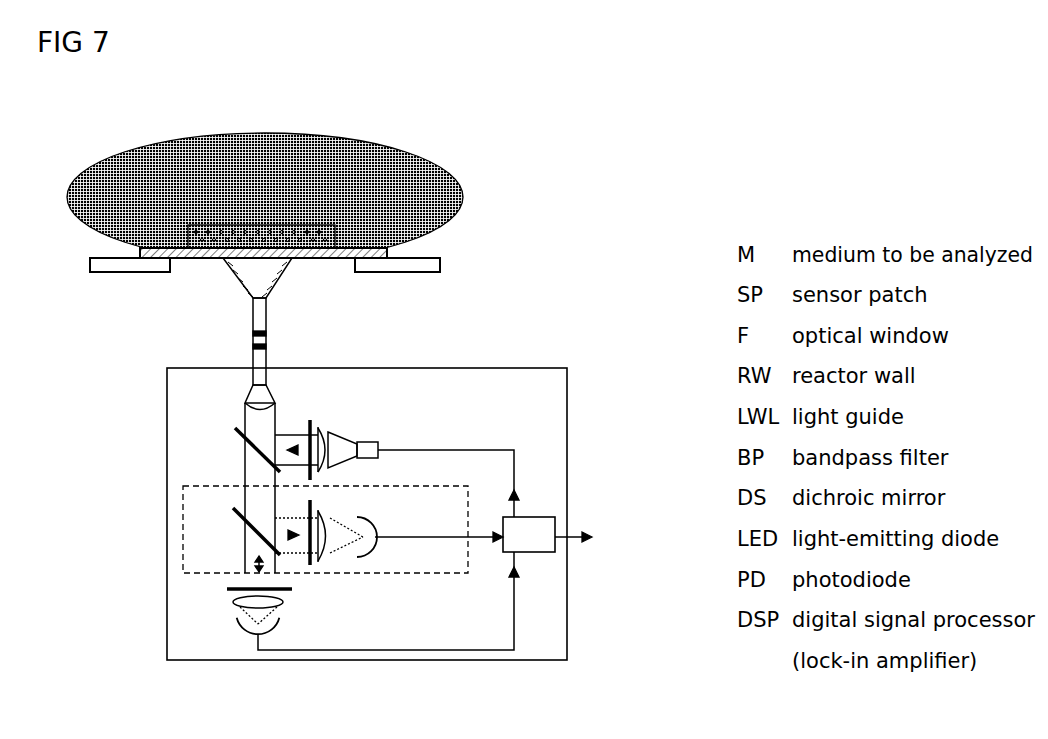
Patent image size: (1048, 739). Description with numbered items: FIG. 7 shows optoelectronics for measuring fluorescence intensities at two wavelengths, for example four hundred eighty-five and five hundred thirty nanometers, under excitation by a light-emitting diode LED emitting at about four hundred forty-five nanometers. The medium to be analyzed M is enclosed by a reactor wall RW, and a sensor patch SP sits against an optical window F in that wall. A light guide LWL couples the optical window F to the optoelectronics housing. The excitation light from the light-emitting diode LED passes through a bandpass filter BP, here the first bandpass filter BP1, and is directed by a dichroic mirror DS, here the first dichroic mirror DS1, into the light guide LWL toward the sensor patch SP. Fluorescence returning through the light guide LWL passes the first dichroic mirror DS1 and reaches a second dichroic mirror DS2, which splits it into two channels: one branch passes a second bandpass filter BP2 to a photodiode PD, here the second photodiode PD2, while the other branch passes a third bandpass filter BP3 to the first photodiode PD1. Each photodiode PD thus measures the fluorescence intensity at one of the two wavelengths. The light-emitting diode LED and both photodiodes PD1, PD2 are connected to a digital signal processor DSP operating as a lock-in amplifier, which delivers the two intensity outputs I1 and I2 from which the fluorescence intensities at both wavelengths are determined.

The medium to be analyzed M is at (265, 197).
The sensor patch SP is at (261, 227).
The optical window F is at (263, 265).
The reactor wall RW is at (261, 267).
The light guide LWL is at (269, 321).
The bandpass filter BP is at (259, 499).
The bandpass filter BP1 is at (311, 438).
The bandpass filter BP2 is at (311, 525).
The bandpass filter BP3 is at (242, 589).
The dichroic mirror DS is at (236, 491).
The dichroic mirror DS1 is at (236, 450).
The dichroic mirror DS2 is at (236, 531).
The light-emitting diode LED is at (418, 467).
The photodiode PD is at (376, 580).
The photodiode PD1 is at (376, 601).
The photodiode PD2 is at (389, 540).
The digital signal processor (lock-in amplifier) DSP is at (547, 534).
The output signal 1 I1 is at (617, 518).
The output signal 2 I2 is at (617, 558).